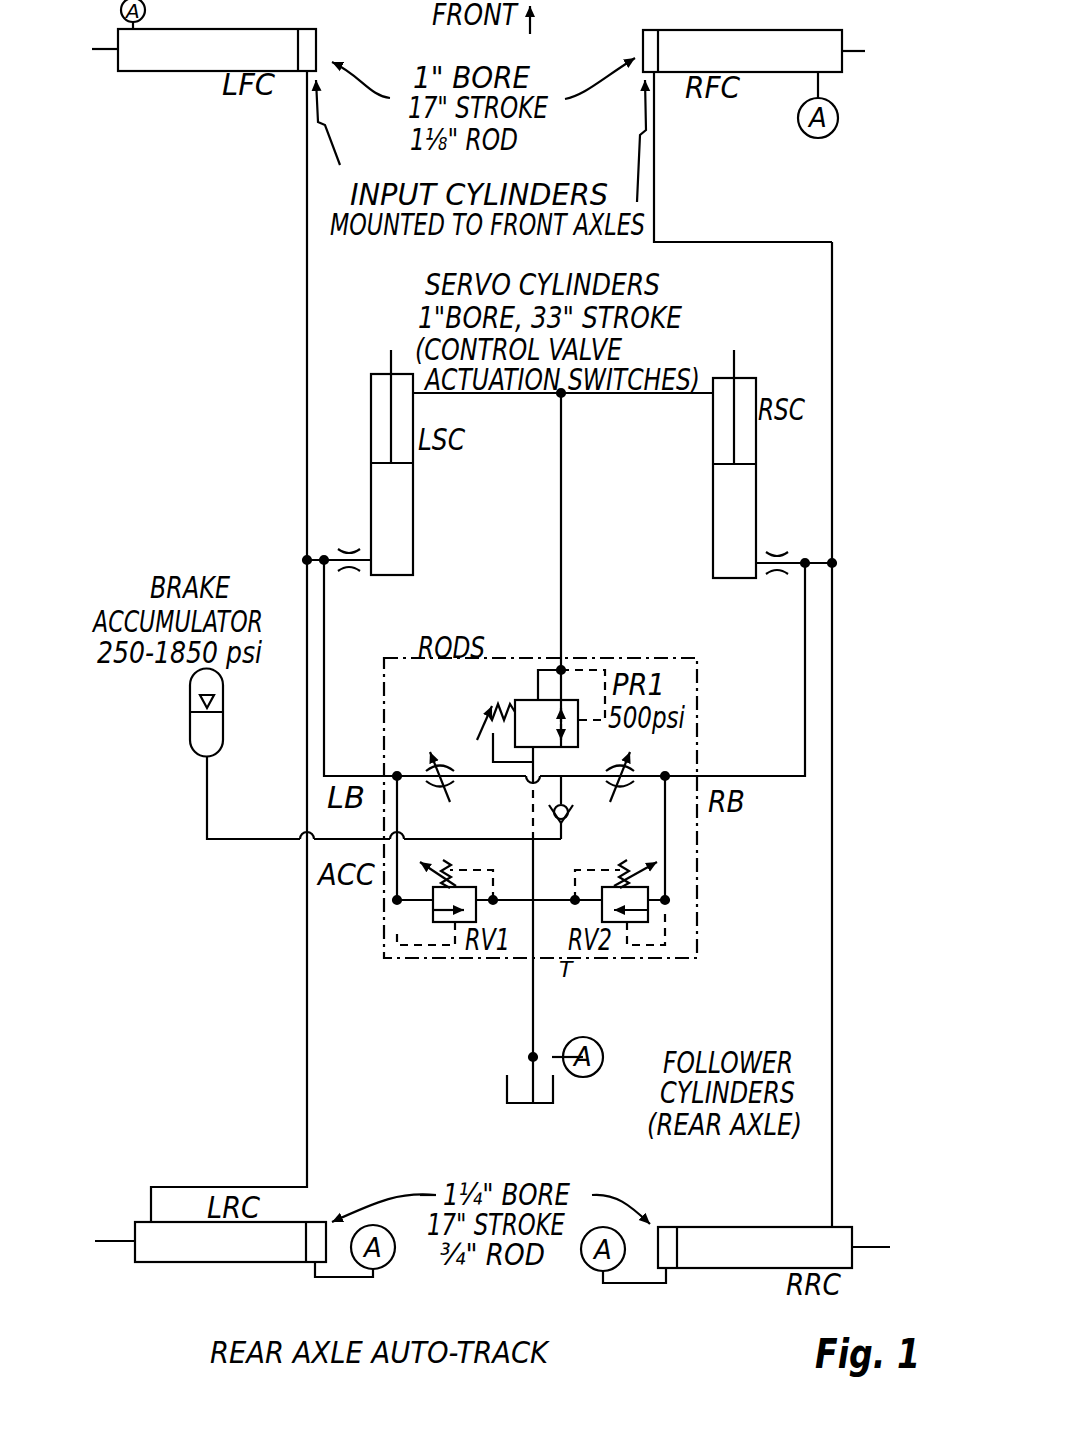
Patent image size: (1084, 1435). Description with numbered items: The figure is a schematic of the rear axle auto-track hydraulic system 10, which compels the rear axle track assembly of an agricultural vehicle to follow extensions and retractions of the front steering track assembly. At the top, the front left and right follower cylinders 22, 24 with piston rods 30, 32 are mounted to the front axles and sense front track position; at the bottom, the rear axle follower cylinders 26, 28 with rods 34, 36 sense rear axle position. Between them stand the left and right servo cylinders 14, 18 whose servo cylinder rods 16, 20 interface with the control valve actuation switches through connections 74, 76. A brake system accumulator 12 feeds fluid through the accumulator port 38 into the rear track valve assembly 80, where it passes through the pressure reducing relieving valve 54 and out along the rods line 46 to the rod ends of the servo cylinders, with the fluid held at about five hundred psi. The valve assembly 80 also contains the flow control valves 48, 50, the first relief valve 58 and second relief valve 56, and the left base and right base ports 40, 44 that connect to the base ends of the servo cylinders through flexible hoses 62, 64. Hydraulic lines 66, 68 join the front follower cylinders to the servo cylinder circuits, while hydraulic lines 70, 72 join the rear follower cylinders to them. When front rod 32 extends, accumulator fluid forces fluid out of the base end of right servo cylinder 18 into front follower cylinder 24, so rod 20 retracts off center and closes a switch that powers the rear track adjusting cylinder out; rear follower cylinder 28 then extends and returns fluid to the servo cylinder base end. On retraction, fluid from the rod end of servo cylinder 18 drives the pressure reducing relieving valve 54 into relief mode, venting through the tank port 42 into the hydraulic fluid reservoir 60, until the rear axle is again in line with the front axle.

The hydraulic system 10 is at (360, 45).
The brake system accumulator 12 is at (222, 716).
The left servo cylinder 14 is at (413, 496).
The servo cylinder rod 16 is at (391, 352).
The right servo cylinder 18 is at (756, 495).
The servo cylinder rod 20 is at (734, 353).
The front left follower cylinder 22 is at (165, 71).
The front right follower cylinder 24 is at (798, 73).
The rear axle follower cylinder 26 is at (148, 1262).
The rear axle auto-track follower cylinder 28 is at (810, 1227).
The piston rod 30 is at (100, 49).
The piston rod 32 is at (855, 50).
The rod 34 is at (105, 1240).
The piston rod 36 is at (870, 1247).
The ACC port 38 is at (378, 837).
The LB port 40 is at (372, 770).
The T-port 42 is at (533, 988).
The RB port 44 is at (720, 776).
The rods line 46 is at (558, 625).
The flow control valve 48 is at (446, 752).
The flow control valve 50 is at (632, 762).
The pressure reducing relieving valve PR1 54 is at (527, 700).
The relief valve RV2 56 is at (650, 917).
The relief valve RV1 58 is at (432, 905).
The hydraulic fluid reservoir 60 is at (555, 1093).
The flexible hose 62 is at (349, 553).
The flexible hose 64 is at (777, 557).
The hydraulic line 66 is at (307, 352).
The hydraulic line 68 is at (654, 190).
The hydraulic line 70 is at (307, 896).
The hydraulic line 72 is at (832, 645).
The control valve actuation switch line 74 is at (488, 395).
The control valve actuation switch line 76 is at (633, 395).
The rear track valve assembly 80 is at (697, 668).